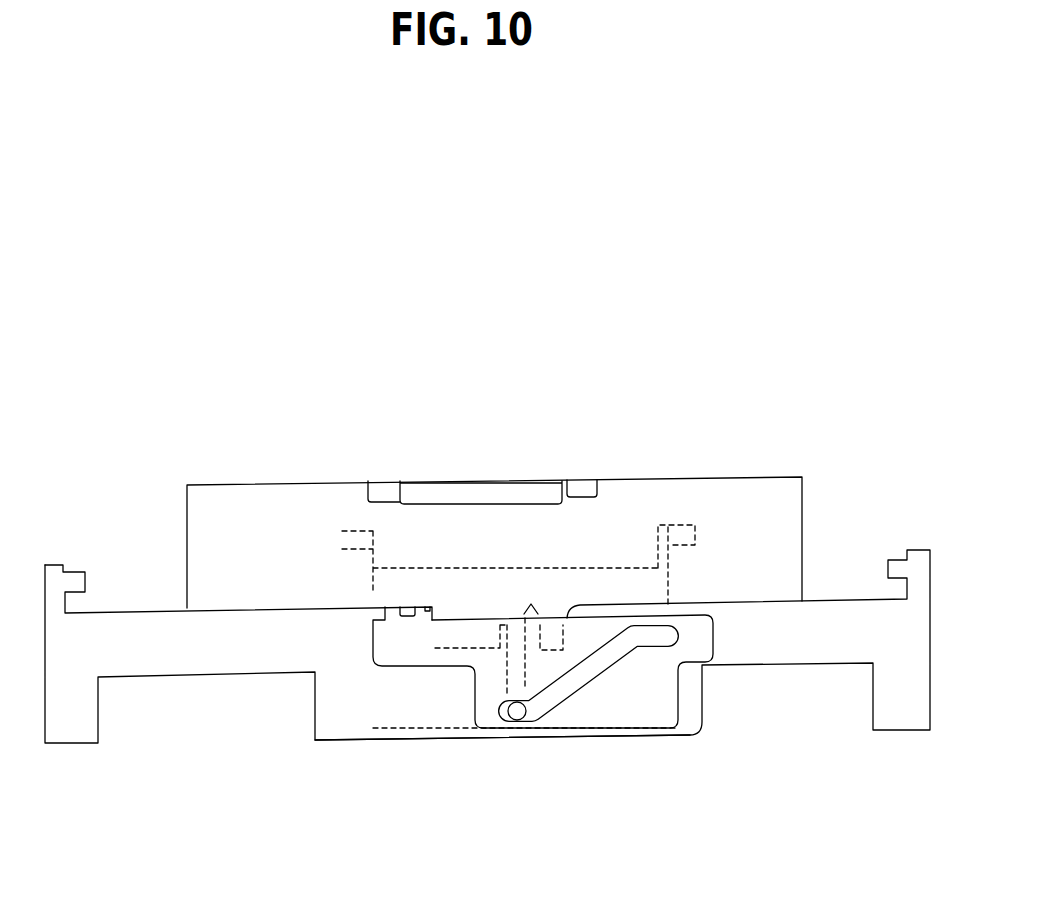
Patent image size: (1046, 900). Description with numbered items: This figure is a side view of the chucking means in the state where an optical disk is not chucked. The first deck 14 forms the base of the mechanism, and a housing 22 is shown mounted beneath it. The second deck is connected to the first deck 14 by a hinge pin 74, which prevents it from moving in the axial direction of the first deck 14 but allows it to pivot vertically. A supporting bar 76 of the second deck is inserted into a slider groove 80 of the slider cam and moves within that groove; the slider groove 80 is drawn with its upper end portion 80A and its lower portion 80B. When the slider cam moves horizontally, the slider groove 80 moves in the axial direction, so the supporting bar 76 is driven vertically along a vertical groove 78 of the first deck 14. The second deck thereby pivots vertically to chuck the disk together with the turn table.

The first deck 14 is at (887, 718).
The housing 22 is at (697, 653).
The hinge pin 74 is at (682, 527).
The supporting bar 76 is at (505, 742).
The vertical groove 78 is at (507, 663).
The slider groove 80 is at (587, 678).
The lever end portion 80A is at (650, 640).
The lever lower portion 80B is at (542, 743).